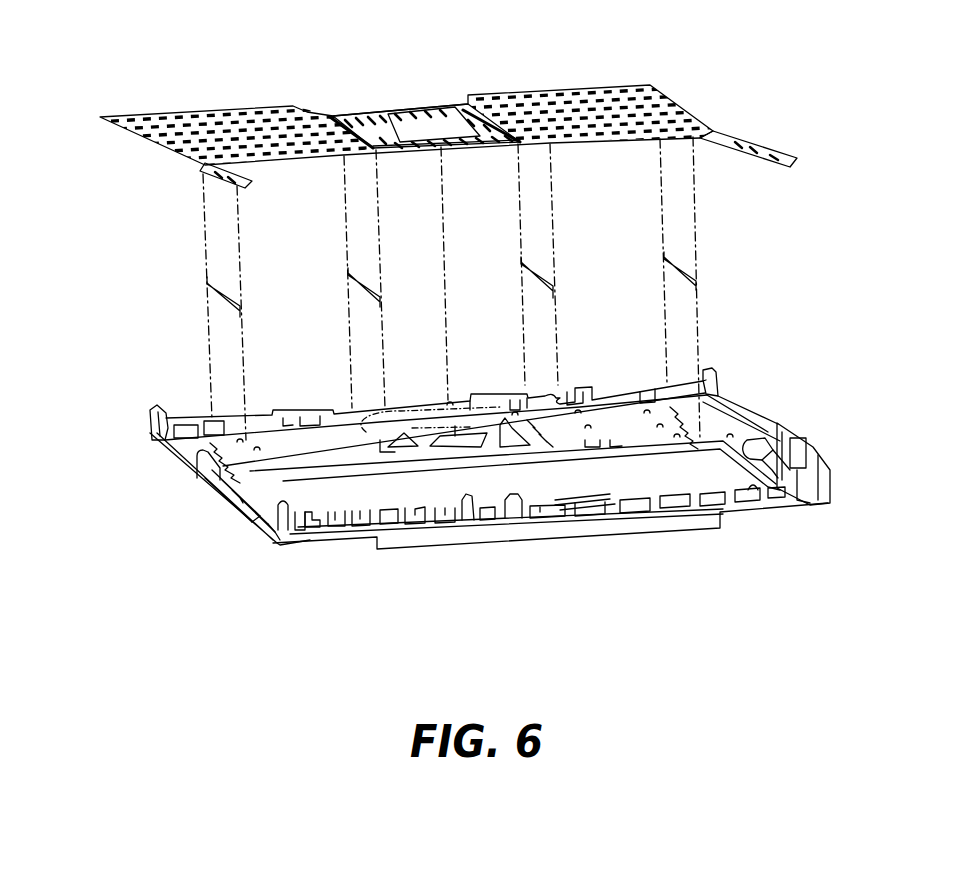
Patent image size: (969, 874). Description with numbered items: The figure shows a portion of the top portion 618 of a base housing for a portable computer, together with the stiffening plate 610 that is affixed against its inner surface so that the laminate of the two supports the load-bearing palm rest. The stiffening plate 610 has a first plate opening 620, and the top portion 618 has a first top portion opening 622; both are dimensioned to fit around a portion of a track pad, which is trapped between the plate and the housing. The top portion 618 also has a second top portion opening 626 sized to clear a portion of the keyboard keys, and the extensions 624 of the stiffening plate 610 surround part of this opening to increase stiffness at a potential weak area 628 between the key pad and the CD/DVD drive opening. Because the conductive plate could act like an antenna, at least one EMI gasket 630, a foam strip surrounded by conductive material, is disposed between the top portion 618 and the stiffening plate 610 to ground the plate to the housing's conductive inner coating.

The stiffening plate 610 is at (290, 104).
The first plate opening 620 is at (430, 124).
The extensions 624 is at (205, 170).
The EMI gasket 630 is at (678, 263).
The top portion 618 is at (660, 527).
The first top portion opening 622 is at (338, 468).
The second top portion opening 626 is at (397, 493).
The potential weak area 628 is at (749, 447).